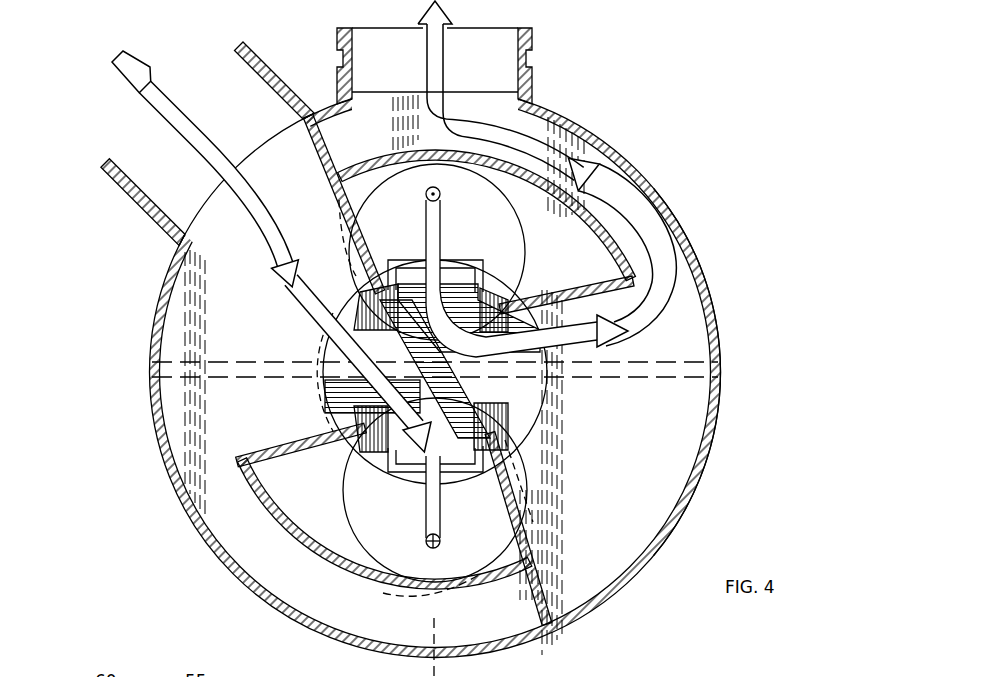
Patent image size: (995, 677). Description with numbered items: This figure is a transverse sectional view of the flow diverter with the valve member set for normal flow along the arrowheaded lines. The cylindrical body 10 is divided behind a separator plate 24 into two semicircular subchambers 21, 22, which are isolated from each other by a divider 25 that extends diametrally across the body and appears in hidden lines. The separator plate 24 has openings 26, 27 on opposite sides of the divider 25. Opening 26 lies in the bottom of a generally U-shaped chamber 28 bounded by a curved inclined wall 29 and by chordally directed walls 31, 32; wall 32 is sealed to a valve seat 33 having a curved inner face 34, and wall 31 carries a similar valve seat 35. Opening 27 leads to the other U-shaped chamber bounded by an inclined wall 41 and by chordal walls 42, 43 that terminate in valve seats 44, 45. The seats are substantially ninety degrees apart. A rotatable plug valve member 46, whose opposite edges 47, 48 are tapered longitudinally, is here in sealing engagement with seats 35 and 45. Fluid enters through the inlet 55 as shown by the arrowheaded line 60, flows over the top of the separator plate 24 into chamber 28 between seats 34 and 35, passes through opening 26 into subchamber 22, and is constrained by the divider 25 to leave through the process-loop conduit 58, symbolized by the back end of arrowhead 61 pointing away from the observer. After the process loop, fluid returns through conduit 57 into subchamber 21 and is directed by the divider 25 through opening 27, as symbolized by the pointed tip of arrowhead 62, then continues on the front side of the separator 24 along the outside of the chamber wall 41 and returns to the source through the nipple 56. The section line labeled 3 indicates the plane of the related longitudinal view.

The body 10 is at (712, 257).
The subchamber 21 is at (687, 331).
The subchamber 22 is at (718, 447).
The separator plate 24 is at (240, 297).
The divider 25 is at (675, 370).
The opening 26 is at (401, 556).
The opening 27 is at (398, 204).
The chamber 28 is at (287, 507).
The inclined wall 29 is at (305, 548).
The chordally directed wall 31 is at (533, 565).
The chordally directed wall 32 is at (247, 462).
The valve seat 33 is at (365, 448).
The curved inner face 34 is at (340, 408).
The valve seat 35 is at (511, 440).
The inclined wall 41 is at (603, 245).
The chordally directed wall 42 is at (578, 307).
The chordally directed wall 43 is at (337, 150).
The valve seat 44 is at (460, 361).
The valve seat 45 is at (360, 290).
The valve member 46 is at (437, 425).
The edge 47 is at (512, 433).
The edge 48 is at (330, 352).
The inlet 55 is at (213, 75).
The nipple 56 is at (523, 29).
The conduit 57 is at (525, 224).
The conduit 58 is at (472, 590).
The arrowheaded line 60 is at (128, 62).
The arrowhead 61 is at (443, 543).
The arrowhead 62 is at (449, 194).
The section line 3 is at (383, 668).